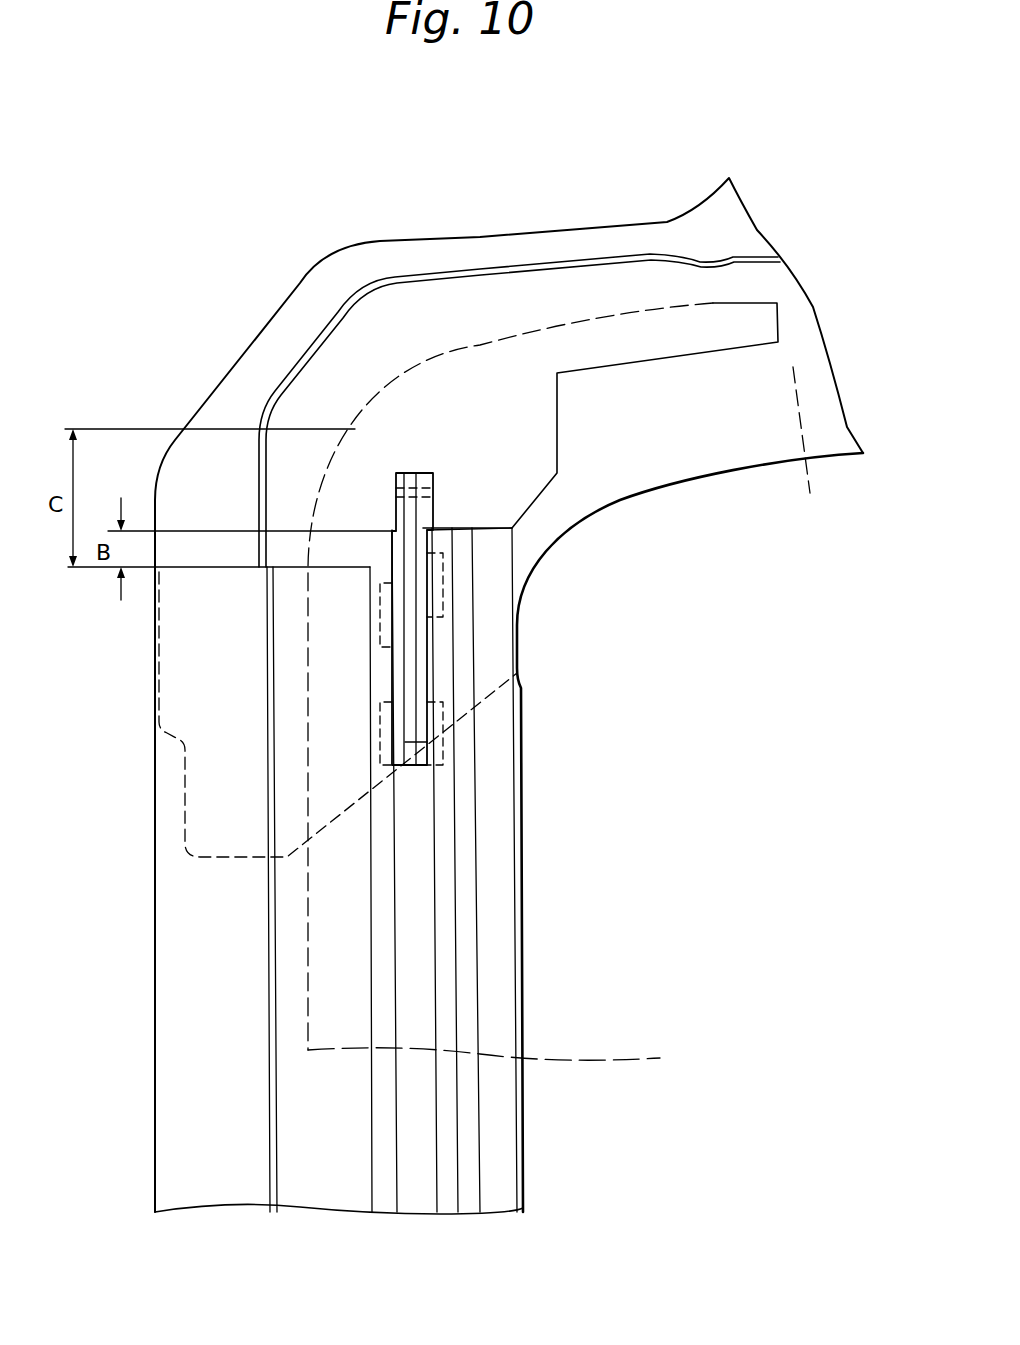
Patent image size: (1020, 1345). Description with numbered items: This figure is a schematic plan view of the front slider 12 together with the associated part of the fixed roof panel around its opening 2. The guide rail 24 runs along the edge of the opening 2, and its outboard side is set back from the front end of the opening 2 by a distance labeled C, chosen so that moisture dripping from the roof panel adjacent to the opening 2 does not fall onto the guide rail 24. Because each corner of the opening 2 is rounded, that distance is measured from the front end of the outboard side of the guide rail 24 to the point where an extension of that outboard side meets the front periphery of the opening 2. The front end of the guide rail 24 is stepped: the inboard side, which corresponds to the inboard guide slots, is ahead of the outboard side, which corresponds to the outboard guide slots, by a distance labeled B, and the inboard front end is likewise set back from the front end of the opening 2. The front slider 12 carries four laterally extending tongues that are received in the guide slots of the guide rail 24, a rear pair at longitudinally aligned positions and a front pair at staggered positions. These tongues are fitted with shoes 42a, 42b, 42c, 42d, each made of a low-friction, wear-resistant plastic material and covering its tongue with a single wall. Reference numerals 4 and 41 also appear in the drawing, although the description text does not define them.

The opening 2 is at (460, 355).
The roof panel 4 is at (632, 313).
The front slider 12 is at (424, 472).
The guide rail 24 is at (417, 1187).
The pillar reinforcement 41 is at (644, 353).
The shoe 42a is at (380, 605).
The shoe 42b is at (443, 590).
The shoe 42c is at (380, 722).
The shoe 42d is at (445, 740).